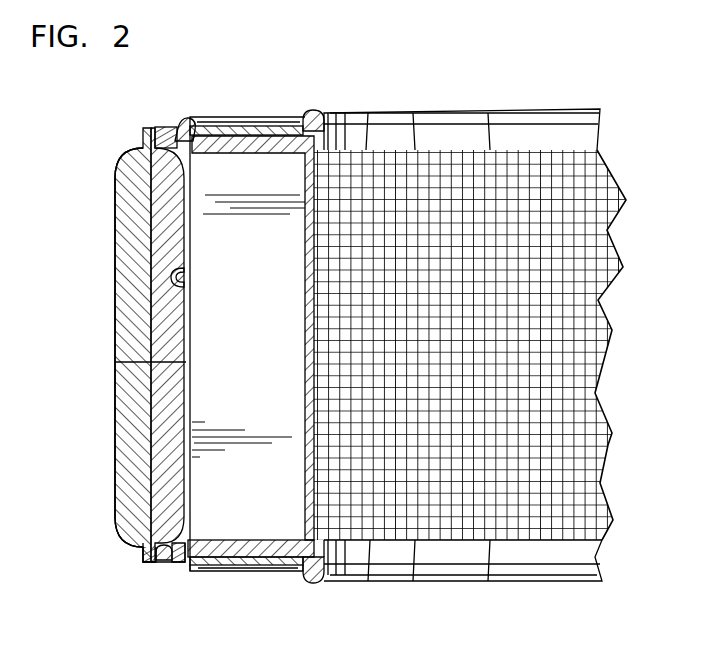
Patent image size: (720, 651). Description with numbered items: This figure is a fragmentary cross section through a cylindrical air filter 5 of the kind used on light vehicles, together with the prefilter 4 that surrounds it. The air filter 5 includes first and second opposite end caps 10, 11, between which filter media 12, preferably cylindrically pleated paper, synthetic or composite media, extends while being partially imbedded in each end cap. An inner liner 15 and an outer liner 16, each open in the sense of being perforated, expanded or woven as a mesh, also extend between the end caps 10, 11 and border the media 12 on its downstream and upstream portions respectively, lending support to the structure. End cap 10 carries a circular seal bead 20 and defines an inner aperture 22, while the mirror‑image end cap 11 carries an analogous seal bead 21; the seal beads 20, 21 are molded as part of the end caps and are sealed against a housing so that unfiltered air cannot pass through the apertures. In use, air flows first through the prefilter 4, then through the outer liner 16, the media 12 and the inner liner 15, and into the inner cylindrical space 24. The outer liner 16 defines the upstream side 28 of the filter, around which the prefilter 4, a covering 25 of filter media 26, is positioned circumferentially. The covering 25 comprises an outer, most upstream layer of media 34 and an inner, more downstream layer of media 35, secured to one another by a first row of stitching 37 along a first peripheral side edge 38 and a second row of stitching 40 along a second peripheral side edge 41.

The prefilter 4 is at (105, 341).
The air filter 5 is at (512, 135).
The first end cap 10 is at (240, 126).
The second end cap 11 is at (262, 566).
The filter media 12 is at (282, 180).
The inner liner 15 is at (585, 190).
The outer liner 16 is at (115, 362).
The seal bead 20 is at (440, 108).
The seal bead 21 is at (422, 581).
The inner aperture 22 is at (580, 135).
The inner cylindrical space 24 is at (572, 500).
The covering 25 is at (118, 160).
The filter media 26 is at (118, 210).
The upstream side 28 is at (185, 275).
The outer layer of media 34 is at (128, 478).
The inner layer of media 35 is at (170, 548).
The first row of stitching 37 is at (152, 133).
The first peripheral side edge 38 is at (165, 127).
The second row of stitching 40 is at (163, 548).
The second peripheral side edge 41 is at (148, 553).